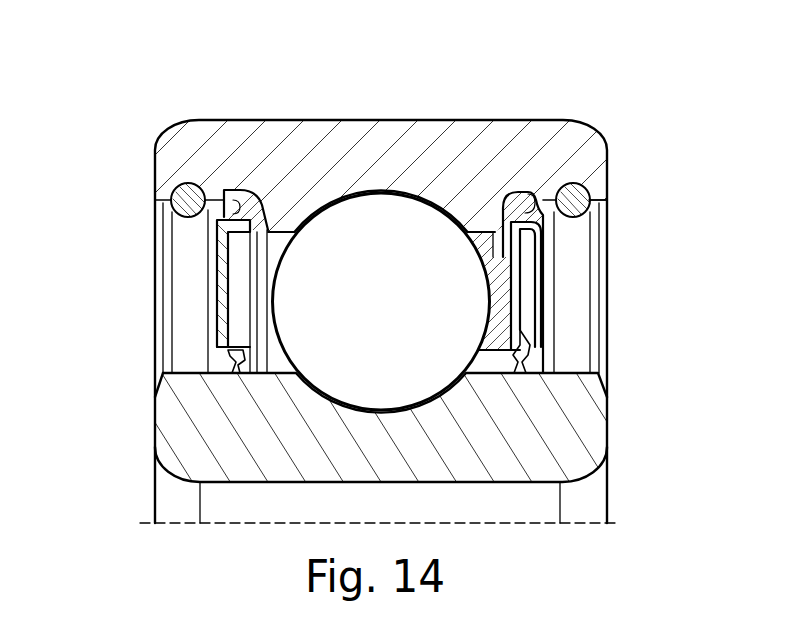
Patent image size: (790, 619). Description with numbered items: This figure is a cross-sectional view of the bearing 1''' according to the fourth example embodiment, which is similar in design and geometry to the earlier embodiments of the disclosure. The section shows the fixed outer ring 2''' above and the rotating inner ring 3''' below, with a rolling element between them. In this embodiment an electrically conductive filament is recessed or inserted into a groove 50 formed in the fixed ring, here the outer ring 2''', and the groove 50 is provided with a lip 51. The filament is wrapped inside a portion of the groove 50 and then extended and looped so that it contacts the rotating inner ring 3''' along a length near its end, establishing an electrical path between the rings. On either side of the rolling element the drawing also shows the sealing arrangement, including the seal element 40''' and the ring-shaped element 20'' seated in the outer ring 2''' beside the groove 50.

The bearing 1''' is at (661, 51).
The outer ring 2''' is at (381, 279).
The inner ring 3''' is at (403, 432).
The sealing ring / O-ring 20'' is at (122, 231).
The seal 40''' is at (592, 293).
The groove 50 is at (586, 190).
The lip 51 is at (596, 206).